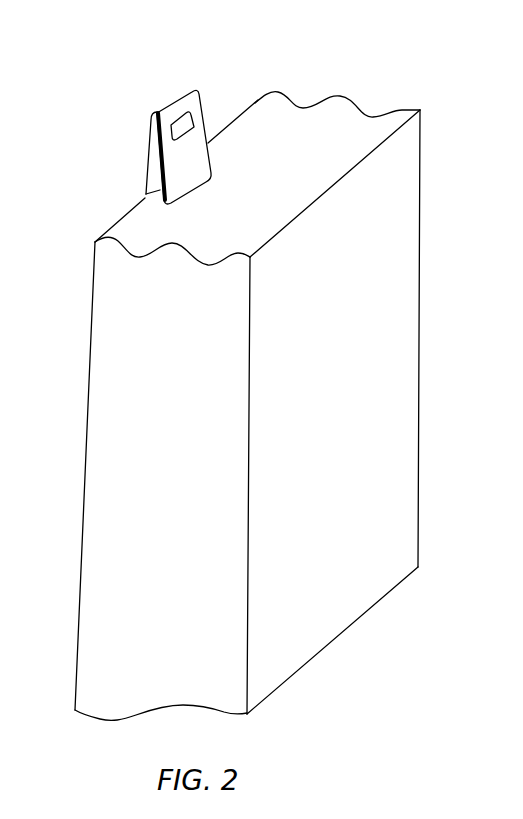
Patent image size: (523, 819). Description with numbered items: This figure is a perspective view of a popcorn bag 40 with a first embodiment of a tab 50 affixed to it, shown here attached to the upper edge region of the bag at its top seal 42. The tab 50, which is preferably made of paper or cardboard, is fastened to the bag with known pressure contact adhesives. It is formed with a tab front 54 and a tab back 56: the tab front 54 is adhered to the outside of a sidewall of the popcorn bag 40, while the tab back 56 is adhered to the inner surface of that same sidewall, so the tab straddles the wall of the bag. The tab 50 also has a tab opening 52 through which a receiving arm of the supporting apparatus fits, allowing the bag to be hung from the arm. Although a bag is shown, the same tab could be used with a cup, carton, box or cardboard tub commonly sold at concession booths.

The popcorn bag 40 is at (383, 242).
The top seal of package 42 is at (243, 112).
The tab 50 is at (125, 110).
The tab opening 52 is at (185, 117).
The tab front 54 is at (148, 153).
The tab back 56 is at (173, 192).